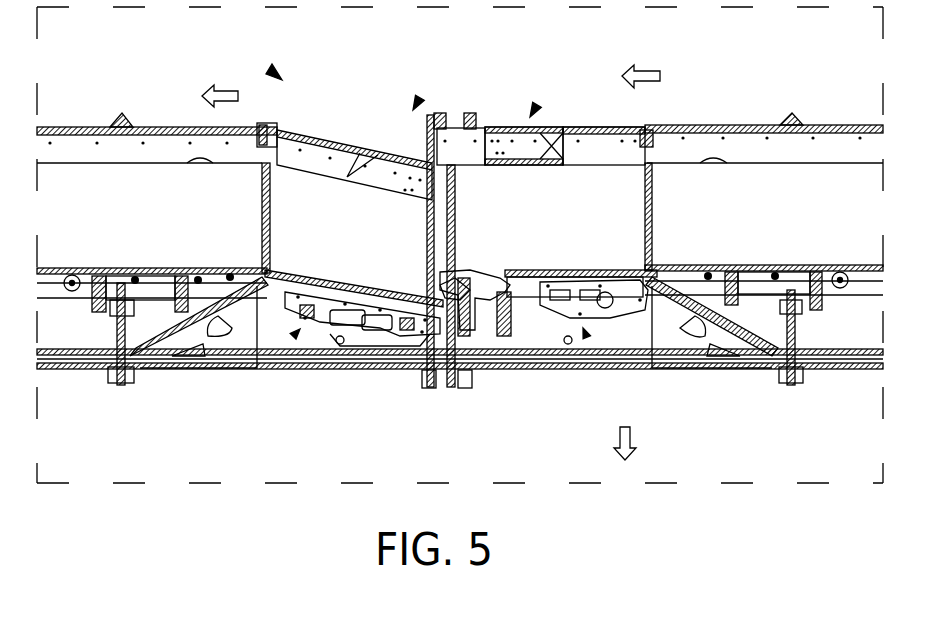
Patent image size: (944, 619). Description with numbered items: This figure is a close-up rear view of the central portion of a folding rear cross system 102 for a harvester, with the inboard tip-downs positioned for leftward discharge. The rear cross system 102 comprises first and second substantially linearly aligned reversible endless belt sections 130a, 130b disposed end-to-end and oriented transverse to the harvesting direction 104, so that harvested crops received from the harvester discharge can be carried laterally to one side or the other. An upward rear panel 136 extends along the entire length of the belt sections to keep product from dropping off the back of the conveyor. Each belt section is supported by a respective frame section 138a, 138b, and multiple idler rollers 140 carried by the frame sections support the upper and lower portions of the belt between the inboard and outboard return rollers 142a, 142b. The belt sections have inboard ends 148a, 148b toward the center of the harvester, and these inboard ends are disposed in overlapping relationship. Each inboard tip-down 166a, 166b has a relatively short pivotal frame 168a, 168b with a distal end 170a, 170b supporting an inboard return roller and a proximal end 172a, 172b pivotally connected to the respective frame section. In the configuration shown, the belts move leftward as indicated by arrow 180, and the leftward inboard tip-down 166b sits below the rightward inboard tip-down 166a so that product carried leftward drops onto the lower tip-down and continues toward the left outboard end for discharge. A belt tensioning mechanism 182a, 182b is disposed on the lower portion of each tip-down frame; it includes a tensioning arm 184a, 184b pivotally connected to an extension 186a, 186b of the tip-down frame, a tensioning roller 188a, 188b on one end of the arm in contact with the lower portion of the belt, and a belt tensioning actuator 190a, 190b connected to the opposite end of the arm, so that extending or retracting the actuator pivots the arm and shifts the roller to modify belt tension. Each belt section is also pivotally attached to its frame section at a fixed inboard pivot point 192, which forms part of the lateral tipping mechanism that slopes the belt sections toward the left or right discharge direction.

The folding rear cross system 102 is at (270, 68).
The harvesting direction 104 is at (634, 440).
The first belt section 130a is at (170, 190).
The second belt section 130b is at (670, 183).
The upward rear panel 136 is at (113, 157).
The first frame section 138a is at (173, 363).
The second frame section 138b is at (688, 367).
The idler rollers 140 is at (95, 305).
The inboard return roller 142a is at (455, 360).
The outboard return roller 142b is at (452, 282).
The inboard end of first belt section 148a is at (420, 98).
The inboard end of second belt section 148b is at (537, 107).
The rightward inboard tip-down 166a is at (300, 180).
The leftward inboard tip-down 166b is at (527, 197).
The first inboard tip-down frame 168a is at (315, 325).
The second inboard tip-down frame 168b is at (645, 258).
The distal end of first tip-down frame 170a is at (472, 340).
The distal end of second tip-down frame 170b is at (425, 164).
The proximal end of first tip-down frame 172a is at (264, 212).
The proximal end of second tip-down frame 172b is at (654, 210).
The arrow indicating leftward belt motion 180 is at (214, 86).
The first belt tensioning mechanism 182a is at (295, 333).
The second belt tensioning mechanism 182b is at (586, 334).
The first tensioning arm 184a is at (356, 352).
The second tensioning arm 184b is at (530, 305).
The first frame extension 186a is at (267, 310).
The second frame extension 186b is at (650, 358).
The first tensioning roller 188a is at (376, 368).
The second tensioning roller 188b is at (520, 305).
The first belt tensioning actuator 190a is at (338, 342).
The second belt tensioning actuator 190b is at (568, 342).
The fixed inboard pivot point 192 is at (263, 272).